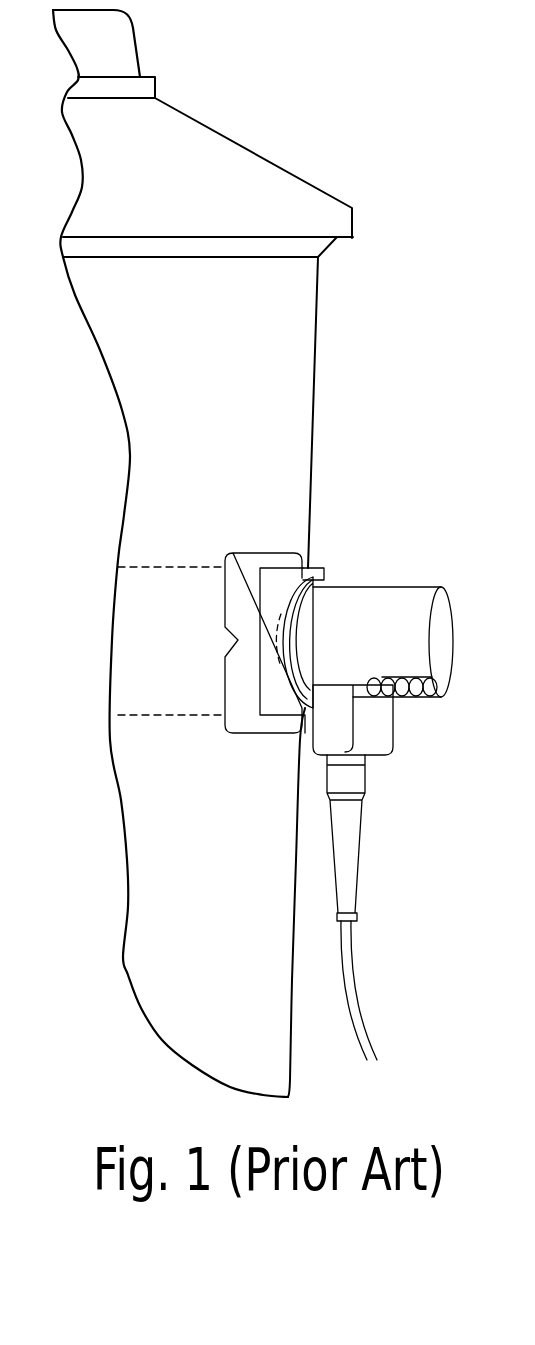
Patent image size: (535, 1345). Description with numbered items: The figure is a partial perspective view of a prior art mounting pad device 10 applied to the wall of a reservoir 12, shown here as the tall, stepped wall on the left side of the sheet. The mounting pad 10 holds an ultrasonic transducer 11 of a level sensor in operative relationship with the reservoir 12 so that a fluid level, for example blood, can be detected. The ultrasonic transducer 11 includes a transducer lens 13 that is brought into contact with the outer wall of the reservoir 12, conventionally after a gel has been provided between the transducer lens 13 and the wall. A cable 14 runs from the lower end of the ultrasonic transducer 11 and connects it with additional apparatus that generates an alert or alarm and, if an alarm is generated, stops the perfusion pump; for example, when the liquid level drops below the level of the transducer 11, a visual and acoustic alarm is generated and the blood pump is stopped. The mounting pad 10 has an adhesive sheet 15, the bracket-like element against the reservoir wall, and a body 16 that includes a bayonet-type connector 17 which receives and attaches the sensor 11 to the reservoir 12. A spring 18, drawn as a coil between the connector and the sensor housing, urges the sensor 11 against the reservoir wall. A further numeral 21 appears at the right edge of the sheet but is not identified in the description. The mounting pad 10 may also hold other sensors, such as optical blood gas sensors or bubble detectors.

The mounting pad device 10 is at (316, 759).
The ultrasonic transducer 11 is at (372, 730).
The reservoir 12 is at (338, 325).
The transducer lens 13 is at (278, 660).
The cable 14 is at (352, 972).
The adhesive sheet 15 is at (247, 570).
The body 16 is at (307, 570).
The bayonet-type connector 17 is at (392, 600).
The spring 18 is at (413, 703).
The reference element 21 is at (526, 1043).